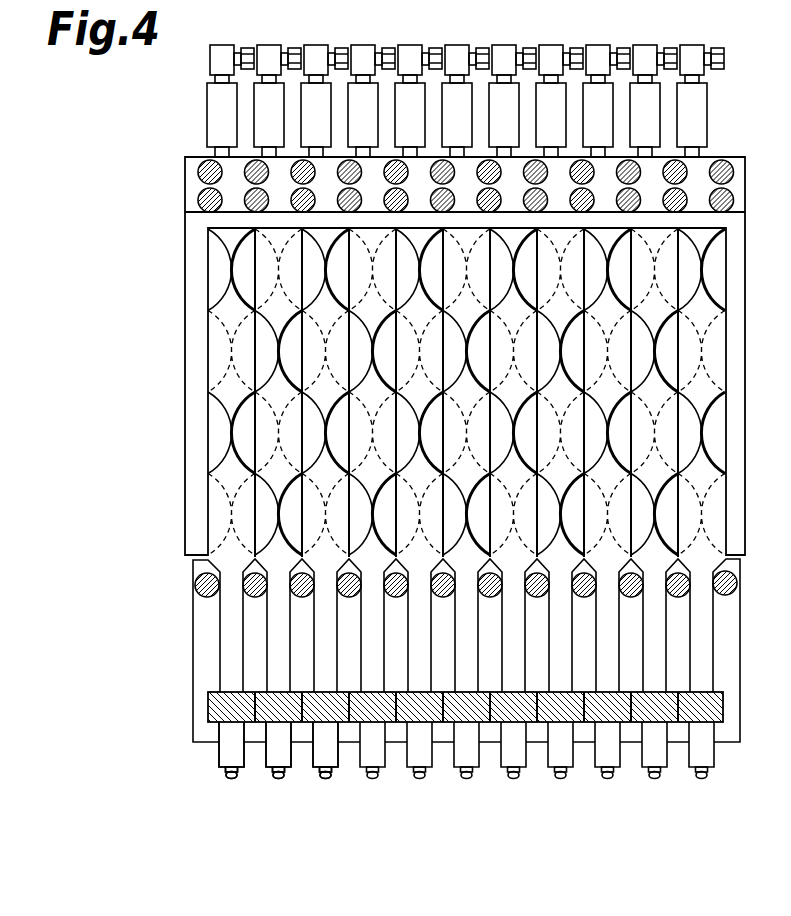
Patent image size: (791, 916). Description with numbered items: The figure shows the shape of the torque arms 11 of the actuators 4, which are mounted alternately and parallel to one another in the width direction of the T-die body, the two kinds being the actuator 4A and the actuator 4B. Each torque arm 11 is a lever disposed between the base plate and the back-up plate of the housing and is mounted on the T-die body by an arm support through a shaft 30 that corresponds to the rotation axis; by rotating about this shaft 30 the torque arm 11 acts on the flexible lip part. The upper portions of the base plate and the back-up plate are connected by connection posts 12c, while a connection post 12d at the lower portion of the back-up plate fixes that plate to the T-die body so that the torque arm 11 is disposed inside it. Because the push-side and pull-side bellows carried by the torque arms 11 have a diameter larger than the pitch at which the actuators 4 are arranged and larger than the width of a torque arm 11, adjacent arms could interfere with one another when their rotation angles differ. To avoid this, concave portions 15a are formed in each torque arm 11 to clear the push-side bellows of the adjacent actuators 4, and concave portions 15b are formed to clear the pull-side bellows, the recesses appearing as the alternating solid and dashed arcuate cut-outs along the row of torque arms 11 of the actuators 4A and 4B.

The connection posts 12c is at (206, 200).
The concave portions 15a is at (290, 278).
The concave portions 15b is at (232, 352).
The connection post 12d is at (196, 587).
The torque arm 11 is at (278, 650).
The shaft 30 is at (210, 705).
The actuators 4 is at (466, 750).
The actuator 4A is at (278, 790).
The actuator 4B is at (231, 790).